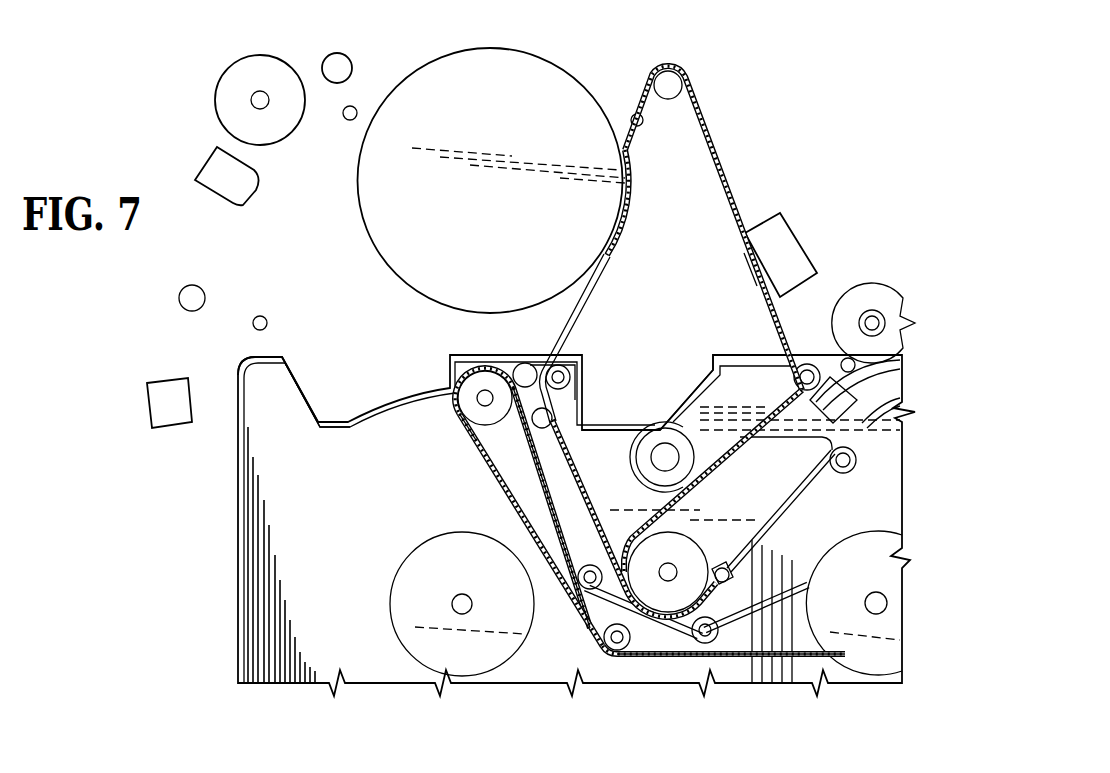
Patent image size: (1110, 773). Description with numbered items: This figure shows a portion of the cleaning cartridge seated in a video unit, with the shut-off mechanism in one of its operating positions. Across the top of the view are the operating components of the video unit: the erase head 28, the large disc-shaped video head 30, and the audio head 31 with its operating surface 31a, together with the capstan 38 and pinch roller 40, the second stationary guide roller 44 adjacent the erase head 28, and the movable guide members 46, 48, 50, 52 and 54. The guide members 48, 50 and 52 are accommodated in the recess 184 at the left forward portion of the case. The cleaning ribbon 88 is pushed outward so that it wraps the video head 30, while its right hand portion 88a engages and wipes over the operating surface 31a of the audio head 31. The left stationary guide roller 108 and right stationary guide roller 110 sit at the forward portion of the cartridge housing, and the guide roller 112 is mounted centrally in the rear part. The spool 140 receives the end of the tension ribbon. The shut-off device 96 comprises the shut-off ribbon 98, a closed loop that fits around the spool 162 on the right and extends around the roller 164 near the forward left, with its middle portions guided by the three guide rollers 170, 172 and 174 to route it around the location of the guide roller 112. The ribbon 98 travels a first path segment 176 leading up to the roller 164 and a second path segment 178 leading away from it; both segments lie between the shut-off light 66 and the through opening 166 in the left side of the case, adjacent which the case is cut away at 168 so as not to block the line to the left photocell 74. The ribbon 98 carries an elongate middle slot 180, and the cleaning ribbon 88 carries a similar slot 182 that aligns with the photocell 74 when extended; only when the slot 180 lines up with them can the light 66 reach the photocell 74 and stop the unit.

The erase head 28 is at (200, 170).
The video head 30 is at (557, 86).
The audio head 31 is at (790, 228).
The operating surface 31a is at (743, 260).
The capstan 38 is at (822, 360).
The pinch roller 40 is at (870, 284).
The second stationary guide roller 44 is at (215, 97).
The movable guide member 46 is at (260, 316).
The movable guide member 48 is at (180, 298).
The movable guide member 50 is at (345, 55).
The movable guide member 52 is at (355, 108).
The movable guide member 54 is at (642, 128).
The shut-off light 66 is at (673, 455).
The left photocell 74 is at (178, 423).
The cleaning ribbon 88 is at (712, 137).
The right hand portion of the cleaning ribbon 88a is at (628, 203).
The shut-off device 96 is at (488, 498).
The shut-off ribbon 98 is at (493, 469).
The left stationary guide roller 108 is at (570, 378).
The right stationary guide roller 110 is at (800, 355).
The guide roller 112 is at (685, 548).
The spool 140 is at (402, 575).
The spool 162 is at (873, 663).
The roller 164 is at (473, 407).
The through opening 166 is at (240, 447).
The cut-away portion 168 is at (318, 428).
The guide roller 170 is at (685, 655).
The guide roller 172 is at (620, 660).
The guide roller 174 is at (583, 618).
The first path segment 176 is at (472, 440).
The second path segment 178 is at (547, 502).
The middle slot 180 is at (603, 641).
The middle slot 182 is at (580, 320).
The recess 184 is at (298, 375).